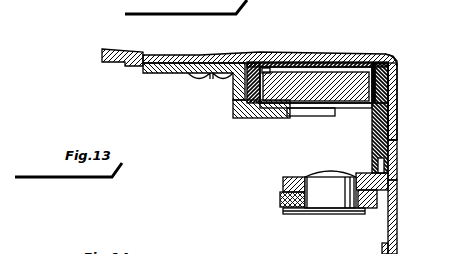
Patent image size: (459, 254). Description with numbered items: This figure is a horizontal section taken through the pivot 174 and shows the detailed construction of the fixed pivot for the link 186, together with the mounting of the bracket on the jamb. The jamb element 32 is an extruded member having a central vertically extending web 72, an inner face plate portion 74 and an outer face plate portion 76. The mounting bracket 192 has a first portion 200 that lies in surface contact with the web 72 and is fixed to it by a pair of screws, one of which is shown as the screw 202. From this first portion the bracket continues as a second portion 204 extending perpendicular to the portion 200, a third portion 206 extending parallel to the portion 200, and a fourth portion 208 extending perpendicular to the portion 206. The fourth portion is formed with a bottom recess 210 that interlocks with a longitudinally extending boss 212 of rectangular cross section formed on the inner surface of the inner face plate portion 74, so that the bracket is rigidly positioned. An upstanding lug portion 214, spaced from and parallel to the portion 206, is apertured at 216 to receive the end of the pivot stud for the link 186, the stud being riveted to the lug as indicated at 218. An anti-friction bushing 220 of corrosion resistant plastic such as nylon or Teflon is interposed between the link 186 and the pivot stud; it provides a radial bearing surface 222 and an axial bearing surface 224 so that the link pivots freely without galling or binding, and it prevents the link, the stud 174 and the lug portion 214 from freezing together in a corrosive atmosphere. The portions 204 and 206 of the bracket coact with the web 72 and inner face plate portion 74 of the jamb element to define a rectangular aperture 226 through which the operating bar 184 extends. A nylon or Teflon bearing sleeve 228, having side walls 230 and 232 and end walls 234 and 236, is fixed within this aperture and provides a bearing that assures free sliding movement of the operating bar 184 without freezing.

The jamb element 32 is at (388, 58).
The web 72 is at (260, 62).
The inner face plate portion 74 is at (397, 193).
The outer face plate portion 76 is at (112, 52).
The pivot 174 is at (330, 214).
The operating bar 184 is at (335, 76).
The link 186 is at (287, 210).
The mounting bracket 192 is at (236, 118).
The first portion 200 is at (168, 61).
The screw 202 is at (193, 80).
The second portion 204 is at (236, 93).
The third portion 206 is at (270, 116).
The fourth portion 208 is at (390, 133).
The bottom recess 210 is at (378, 163).
The boss 212 is at (397, 157).
The upstanding lug portion 214 is at (290, 173).
The aperture 216 is at (287, 182).
The rivet 218 is at (322, 177).
The anti-friction bushing 220 is at (330, 192).
The radial bearing surface 222 is at (287, 214).
The axial bearing surface 224 is at (287, 194).
The rectangular aperture 226 is at (393, 72).
The bearing sleeve 228 is at (393, 62).
The side wall 230 is at (311, 56).
The side wall 232 is at (316, 86).
The end wall 234 is at (393, 90).
The end wall 236 is at (244, 99).